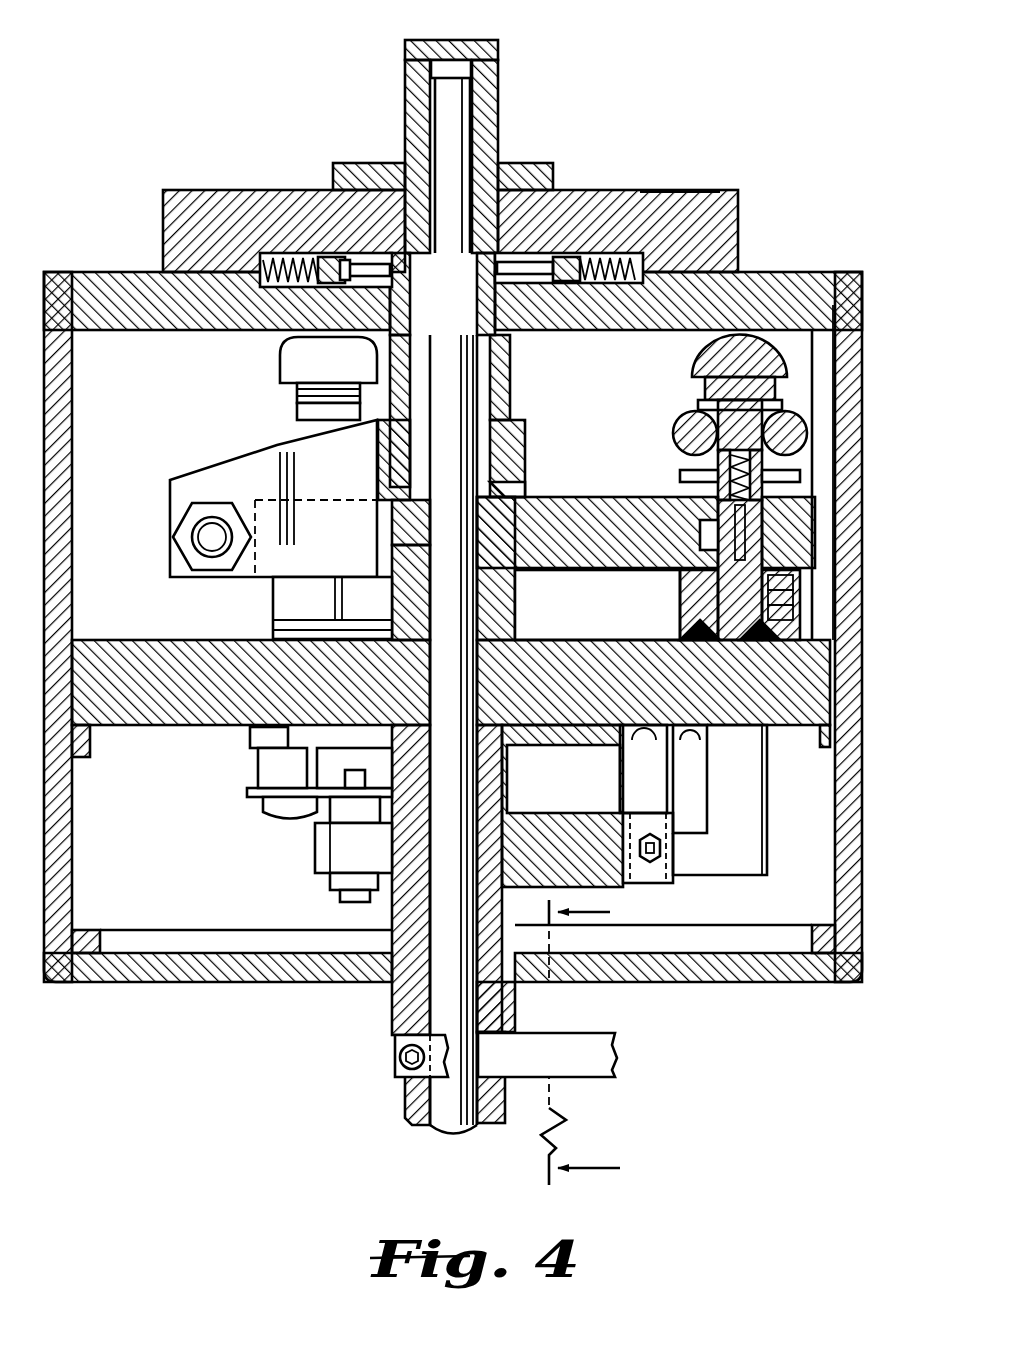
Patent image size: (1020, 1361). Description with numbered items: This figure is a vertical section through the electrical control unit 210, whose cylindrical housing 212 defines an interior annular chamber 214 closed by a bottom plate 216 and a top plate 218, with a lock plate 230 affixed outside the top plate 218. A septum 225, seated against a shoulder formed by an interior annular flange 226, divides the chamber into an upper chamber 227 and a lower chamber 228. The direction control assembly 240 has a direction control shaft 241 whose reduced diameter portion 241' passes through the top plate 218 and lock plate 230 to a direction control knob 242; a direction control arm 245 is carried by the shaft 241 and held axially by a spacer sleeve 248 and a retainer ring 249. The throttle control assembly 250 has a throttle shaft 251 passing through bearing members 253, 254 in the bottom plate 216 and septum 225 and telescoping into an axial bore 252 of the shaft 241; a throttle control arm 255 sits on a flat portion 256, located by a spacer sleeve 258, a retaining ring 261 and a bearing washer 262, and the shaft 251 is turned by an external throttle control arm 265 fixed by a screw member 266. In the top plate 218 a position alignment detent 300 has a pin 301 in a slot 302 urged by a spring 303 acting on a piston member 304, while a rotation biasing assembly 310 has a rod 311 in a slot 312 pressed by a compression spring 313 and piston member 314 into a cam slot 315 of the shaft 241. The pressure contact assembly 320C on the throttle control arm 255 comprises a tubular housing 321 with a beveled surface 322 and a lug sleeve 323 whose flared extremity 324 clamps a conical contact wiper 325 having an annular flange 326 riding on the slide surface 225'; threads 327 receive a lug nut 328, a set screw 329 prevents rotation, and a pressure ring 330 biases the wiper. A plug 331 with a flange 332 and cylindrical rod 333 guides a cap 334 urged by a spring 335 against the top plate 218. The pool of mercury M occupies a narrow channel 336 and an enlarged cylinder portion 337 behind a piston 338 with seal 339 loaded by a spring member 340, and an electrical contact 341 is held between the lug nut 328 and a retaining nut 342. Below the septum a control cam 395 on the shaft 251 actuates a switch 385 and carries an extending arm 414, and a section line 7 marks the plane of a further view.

The electrical control unit 210 is at (572, 78).
The cylindrical housing 212 is at (848, 412).
The interior annular chamber 214 is at (848, 454).
The bottom plate 216 is at (752, 977).
The top plate 218 is at (772, 282).
The septum 225 is at (861, 669).
The slide surface 225' is at (597, 605).
The interior annular flange 226 is at (830, 760).
The upper chamber 227 is at (88, 567).
The lower chamber 228 is at (142, 807).
The lock plate 230 is at (740, 214).
The direction control assembly 240 is at (240, 428).
The direction control shaft 241 is at (442, 294).
The reduced diameter portion 241' is at (502, 156).
The direction control knob 242 is at (500, 48).
The direction control arm 245 is at (372, 445).
The spacer sleeve 248 is at (478, 368).
The retainer ring 249 is at (512, 492).
The throttle control assembly 250 is at (640, 395).
The throttle shaft 251 is at (410, 985).
The axial bore 252 is at (488, 458).
The bearing member 253 is at (515, 1005).
The bearing member 254 is at (403, 752).
The throttle control arm 255 is at (587, 497).
The flat portion 256 is at (392, 518).
The spacer sleeve 258 is at (395, 568).
The retaining ring 261 is at (392, 600).
The bearing washer 262 is at (385, 628).
The throttle control arm 265 is at (590, 1036).
The screw member 266 is at (395, 1053).
The position alignment detent 300 is at (545, 245).
The pin 301 is at (522, 262).
The slot 302 is at (558, 290).
The spring 303 is at (690, 230).
The piston member 304 is at (622, 258).
The rotation biasing assembly 310 is at (292, 332).
The rod 311 is at (362, 262).
The slot 312 is at (332, 262).
The compression spring 313 is at (260, 262).
The piston member 314 is at (300, 262).
The cam slot 315 is at (393, 178).
The pressure contact assembly 320C is at (800, 350).
The tubular housing 321 is at (795, 590).
The beveled surface 322 is at (795, 612).
The lug sleeve 323 is at (795, 572).
The flared extremity 324 is at (451, 693).
The contact wiper 325 is at (690, 600).
The annular flange 326 is at (690, 634).
The threads 327 is at (782, 412).
The lug nut 328 is at (836, 486).
The set screw 329 is at (640, 566).
The pressure ring 330 is at (790, 637).
The plug 331 is at (808, 433).
The flange 332 is at (812, 352).
The cylindrical rod 333 is at (705, 372).
The cap 334 is at (700, 352).
The spring 335 is at (700, 394).
The narrow channel 336 is at (800, 550).
The enlarged cylinder portion 337 is at (812, 506).
The piston 338 is at (770, 527).
The seal 339 is at (712, 490).
The spring member 340 is at (718, 470).
The electrical contact 341 is at (712, 452).
The retaining nut 342 is at (678, 422).
The switch 385 is at (288, 834).
The control cam 395 is at (545, 812).
The extending arm 414 is at (650, 885).
The pool of mercury M is at (782, 740).
The section line 7- 7 is at (594, 1042).